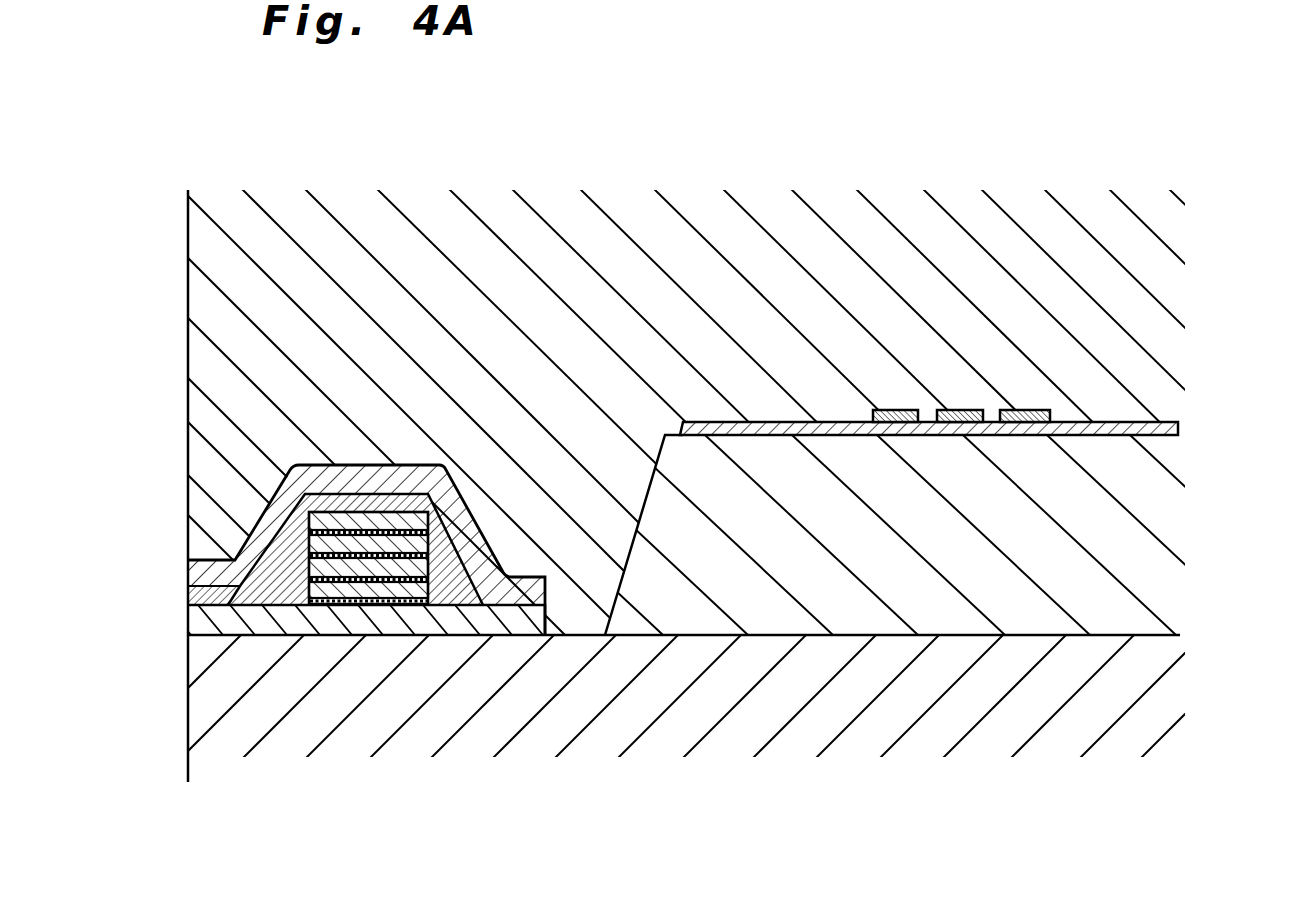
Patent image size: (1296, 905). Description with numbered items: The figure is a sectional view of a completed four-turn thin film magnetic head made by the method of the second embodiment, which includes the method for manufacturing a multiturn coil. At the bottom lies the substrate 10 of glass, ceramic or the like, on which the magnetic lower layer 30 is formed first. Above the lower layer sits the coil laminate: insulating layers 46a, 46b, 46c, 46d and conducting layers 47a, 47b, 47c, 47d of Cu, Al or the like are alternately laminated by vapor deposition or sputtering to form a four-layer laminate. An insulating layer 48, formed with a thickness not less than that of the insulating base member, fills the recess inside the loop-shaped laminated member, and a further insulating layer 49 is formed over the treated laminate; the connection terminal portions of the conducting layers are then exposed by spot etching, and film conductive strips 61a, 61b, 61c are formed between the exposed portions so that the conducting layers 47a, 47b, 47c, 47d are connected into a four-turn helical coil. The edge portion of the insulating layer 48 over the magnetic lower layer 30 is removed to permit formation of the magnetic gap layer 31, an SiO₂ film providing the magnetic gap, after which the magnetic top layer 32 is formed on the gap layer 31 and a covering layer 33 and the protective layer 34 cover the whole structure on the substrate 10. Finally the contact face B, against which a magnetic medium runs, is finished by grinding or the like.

The substrate 10 is at (232, 697).
The magnetic lower layer 30 is at (207, 622).
The magnetic gap layer 31 is at (188, 588).
The magnetic top layer 32 is at (307, 481).
The covering layer 33 is at (290, 548).
The protective layer 34 is at (260, 292).
The contact face B is at (176, 560).
The insulating layer 46a is at (327, 606).
The insulating layer 46b is at (392, 580).
The insulating layer 46c is at (426, 556).
The insulating layer 46d is at (428, 533).
The conducting layer 47a is at (360, 592).
The conducting layer 47b is at (420, 570).
The conducting layer 47c is at (428, 545).
The conducting layer 47d is at (430, 521).
The insulating layer 48 is at (1127, 490).
The insulating layer 49 is at (1172, 422).
The film conductive strip 61a is at (893, 408).
The film conductive strip 61b is at (963, 408).
The film conductive strip 61c is at (1030, 408).